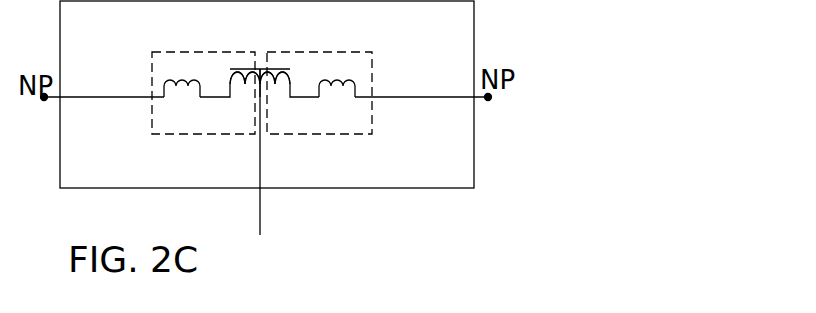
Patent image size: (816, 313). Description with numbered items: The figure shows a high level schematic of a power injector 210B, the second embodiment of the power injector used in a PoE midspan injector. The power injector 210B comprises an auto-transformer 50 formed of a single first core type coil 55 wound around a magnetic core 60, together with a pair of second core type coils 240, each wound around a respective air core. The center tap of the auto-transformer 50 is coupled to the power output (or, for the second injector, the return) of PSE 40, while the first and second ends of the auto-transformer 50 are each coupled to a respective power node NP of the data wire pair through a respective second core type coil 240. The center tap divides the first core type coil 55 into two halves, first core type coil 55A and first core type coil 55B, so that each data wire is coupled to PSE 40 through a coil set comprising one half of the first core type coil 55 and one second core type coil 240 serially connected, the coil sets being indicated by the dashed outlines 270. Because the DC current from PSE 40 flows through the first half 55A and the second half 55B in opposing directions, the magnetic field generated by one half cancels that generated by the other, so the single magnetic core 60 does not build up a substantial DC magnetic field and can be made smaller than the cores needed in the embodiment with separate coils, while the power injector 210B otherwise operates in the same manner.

The power injector 210B is at (340, 188).
The impedance matching network 270 is at (150, 113).
The second core type coil 240 is at (187, 97).
The first core type coil 55 is at (232, 77).
The first half of first core type coil 55A is at (288, 80).
The second half of first core type coil 55B is at (237, 88).
The magnetic core 60 is at (277, 80).
The PSE 40 is at (254, 166).
The auto-transformer 50 is at (247, 78).